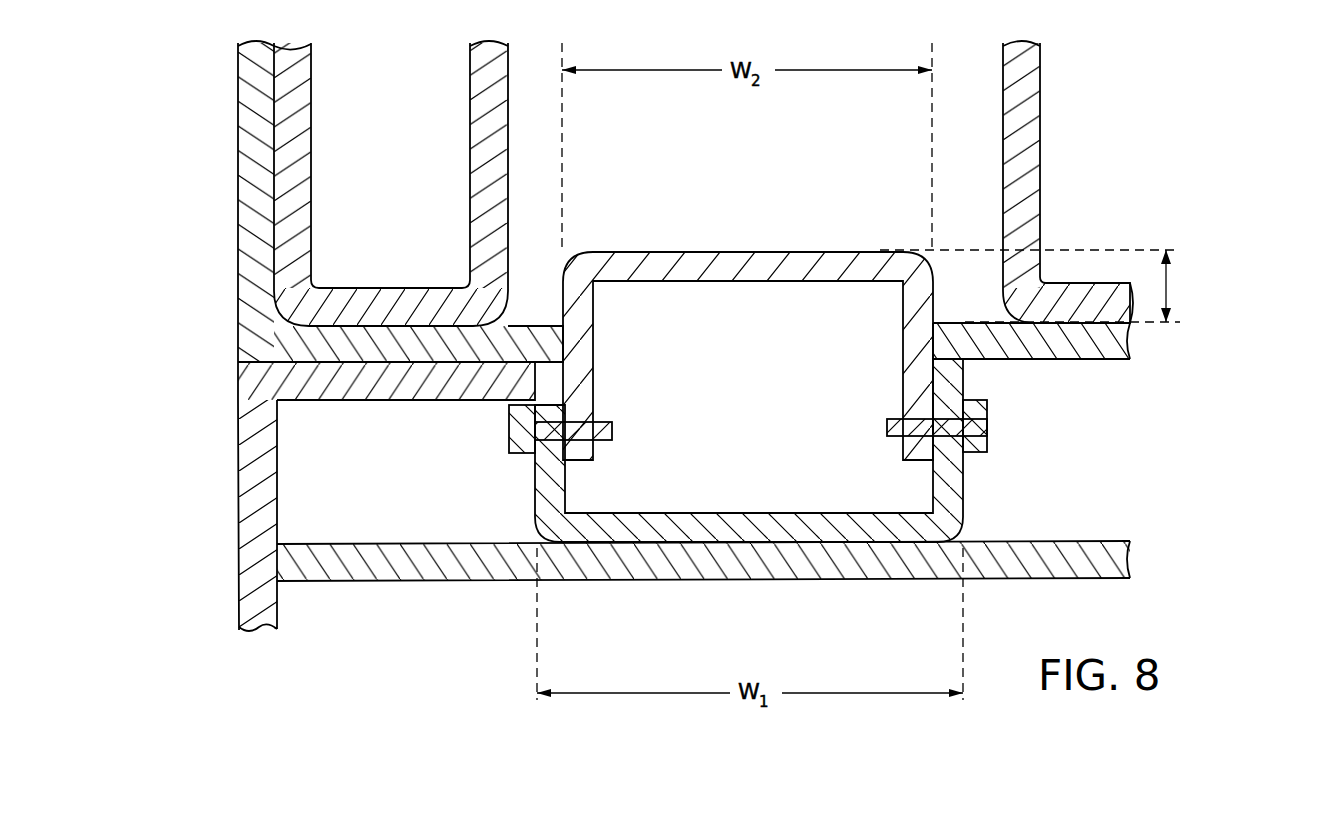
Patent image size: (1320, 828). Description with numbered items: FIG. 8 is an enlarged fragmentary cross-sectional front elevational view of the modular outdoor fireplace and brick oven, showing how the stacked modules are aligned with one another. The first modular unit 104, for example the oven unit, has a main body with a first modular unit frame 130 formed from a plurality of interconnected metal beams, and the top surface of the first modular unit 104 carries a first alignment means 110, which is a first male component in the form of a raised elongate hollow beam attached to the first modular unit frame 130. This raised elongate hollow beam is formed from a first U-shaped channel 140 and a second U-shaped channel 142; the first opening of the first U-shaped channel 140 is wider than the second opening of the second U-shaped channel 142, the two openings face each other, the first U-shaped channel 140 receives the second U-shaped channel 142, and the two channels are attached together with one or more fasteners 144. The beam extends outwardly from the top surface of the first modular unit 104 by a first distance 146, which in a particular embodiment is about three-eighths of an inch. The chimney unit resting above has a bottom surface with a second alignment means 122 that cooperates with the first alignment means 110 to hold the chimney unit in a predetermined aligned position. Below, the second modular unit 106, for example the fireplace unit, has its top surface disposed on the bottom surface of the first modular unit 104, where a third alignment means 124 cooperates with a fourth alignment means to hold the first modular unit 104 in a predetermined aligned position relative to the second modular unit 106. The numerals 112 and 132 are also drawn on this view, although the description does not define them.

The first modular unit 104 is at (238, 170).
The second modular unit 106 is at (239, 497).
The first alignment means 110 is at (748, 312).
The cover 112 is at (812, 246).
The second alignment means 122 is at (533, 318).
The third alignment means 124 is at (748, 324).
The first modular unit frame 130 is at (290, 345).
The second layer 132 is at (290, 388).
The first U-shaped channel 140 is at (722, 520).
The second U-shaped channel 142 is at (714, 268).
The fasteners 144 is at (540, 428).
The first distance 146 is at (1166, 287).